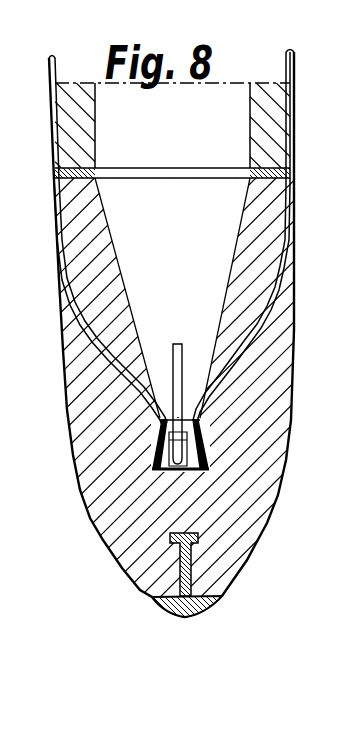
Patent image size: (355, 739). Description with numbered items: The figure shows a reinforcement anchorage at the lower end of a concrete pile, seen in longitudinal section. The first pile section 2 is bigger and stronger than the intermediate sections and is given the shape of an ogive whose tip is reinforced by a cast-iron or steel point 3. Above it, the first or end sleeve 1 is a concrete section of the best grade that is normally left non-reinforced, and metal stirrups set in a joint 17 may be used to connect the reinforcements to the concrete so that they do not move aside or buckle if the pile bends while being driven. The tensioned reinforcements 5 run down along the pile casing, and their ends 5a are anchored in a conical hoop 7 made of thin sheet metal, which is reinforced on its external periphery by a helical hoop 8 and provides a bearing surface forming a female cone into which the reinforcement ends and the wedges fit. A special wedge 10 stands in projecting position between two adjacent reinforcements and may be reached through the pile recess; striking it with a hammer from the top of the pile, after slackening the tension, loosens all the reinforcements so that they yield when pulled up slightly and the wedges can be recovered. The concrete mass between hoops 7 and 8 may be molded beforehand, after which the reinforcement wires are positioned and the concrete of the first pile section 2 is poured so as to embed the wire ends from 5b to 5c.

The end sleeve 1 is at (276, 116).
The joint 17 is at (276, 166).
The reinforcement 5 is at (181, 239).
The wire end embedding limit 5c is at (292, 251).
The wire end embedding start 5b is at (207, 413).
The reinforcement end 5a is at (178, 472).
The first pile section 2 is at (266, 428).
The special wedge 10 is at (183, 367).
The helical hoop 8 is at (182, 459).
The conical hoop 7 is at (208, 465).
The point 3 is at (197, 603).